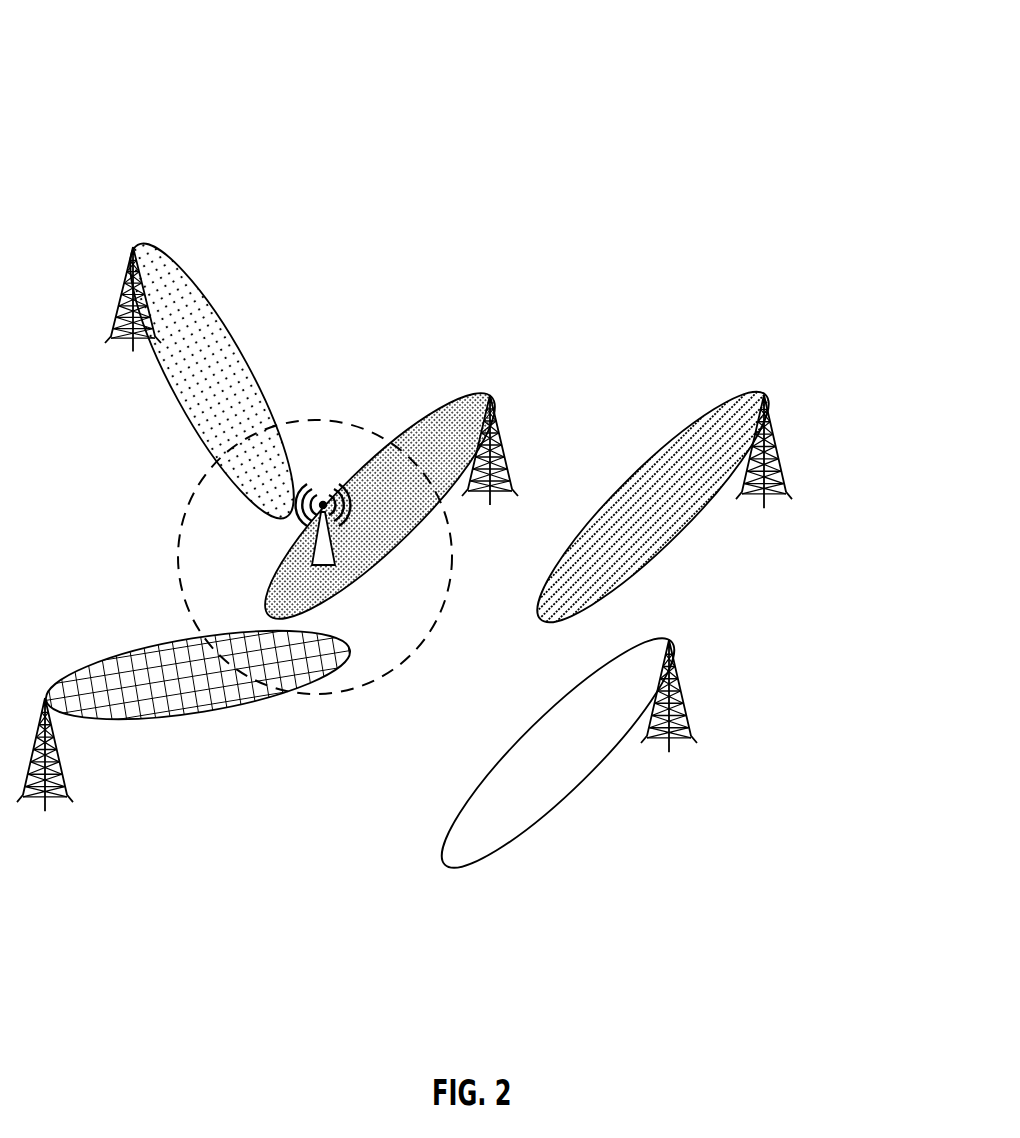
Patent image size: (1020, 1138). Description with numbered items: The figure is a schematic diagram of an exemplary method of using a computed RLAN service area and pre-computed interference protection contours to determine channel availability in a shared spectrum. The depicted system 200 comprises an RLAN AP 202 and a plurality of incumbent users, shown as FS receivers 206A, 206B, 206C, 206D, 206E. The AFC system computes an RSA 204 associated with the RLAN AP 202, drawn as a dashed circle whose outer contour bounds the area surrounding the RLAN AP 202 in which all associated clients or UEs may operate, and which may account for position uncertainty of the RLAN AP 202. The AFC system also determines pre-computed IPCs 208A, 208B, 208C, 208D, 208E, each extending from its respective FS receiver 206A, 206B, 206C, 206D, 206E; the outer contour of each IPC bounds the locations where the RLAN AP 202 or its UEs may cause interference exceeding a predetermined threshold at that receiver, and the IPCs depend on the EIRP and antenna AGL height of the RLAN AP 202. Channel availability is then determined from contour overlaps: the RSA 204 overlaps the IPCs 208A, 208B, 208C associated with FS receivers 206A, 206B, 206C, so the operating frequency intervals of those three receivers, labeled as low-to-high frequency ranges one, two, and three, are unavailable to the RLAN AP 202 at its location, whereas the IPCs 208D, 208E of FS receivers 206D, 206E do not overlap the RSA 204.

The system 200 is at (473, 35).
The RLAN AP 202 is at (322, 482).
The RSA 204 is at (183, 527).
The FS receiver 206A is at (138, 230).
The FS receiver 206B is at (485, 378).
The FS receiver 206C is at (40, 688).
The FS receiver 206D is at (757, 372).
The FS receiver 206E is at (668, 632).
The IPC 208A is at (258, 392).
The IPC 208B is at (418, 440).
The IPC 208C is at (163, 717).
The IPC 208D is at (677, 430).
The IPC 208E is at (530, 727).